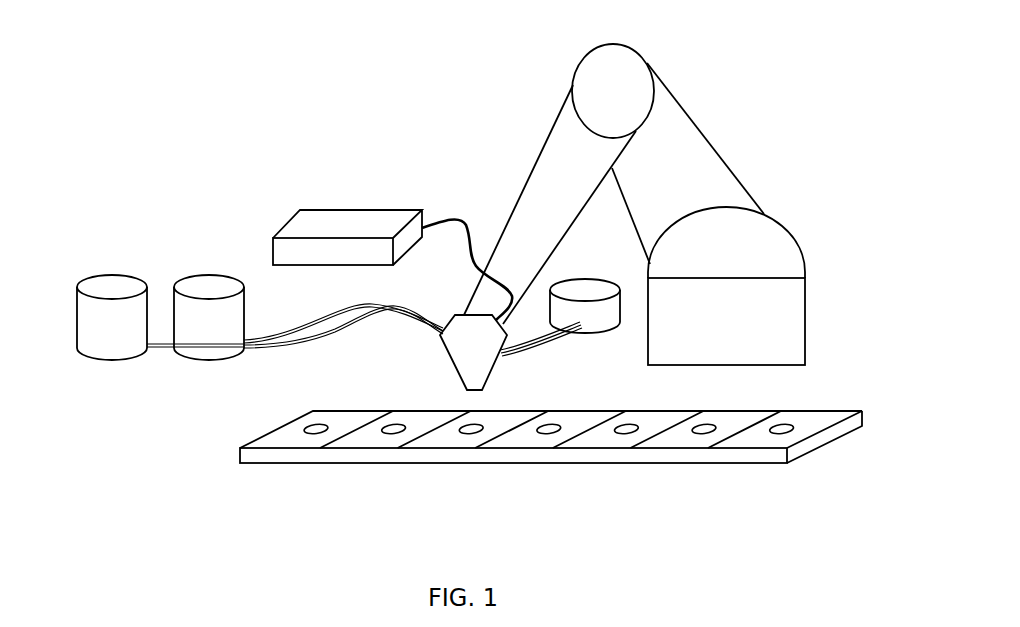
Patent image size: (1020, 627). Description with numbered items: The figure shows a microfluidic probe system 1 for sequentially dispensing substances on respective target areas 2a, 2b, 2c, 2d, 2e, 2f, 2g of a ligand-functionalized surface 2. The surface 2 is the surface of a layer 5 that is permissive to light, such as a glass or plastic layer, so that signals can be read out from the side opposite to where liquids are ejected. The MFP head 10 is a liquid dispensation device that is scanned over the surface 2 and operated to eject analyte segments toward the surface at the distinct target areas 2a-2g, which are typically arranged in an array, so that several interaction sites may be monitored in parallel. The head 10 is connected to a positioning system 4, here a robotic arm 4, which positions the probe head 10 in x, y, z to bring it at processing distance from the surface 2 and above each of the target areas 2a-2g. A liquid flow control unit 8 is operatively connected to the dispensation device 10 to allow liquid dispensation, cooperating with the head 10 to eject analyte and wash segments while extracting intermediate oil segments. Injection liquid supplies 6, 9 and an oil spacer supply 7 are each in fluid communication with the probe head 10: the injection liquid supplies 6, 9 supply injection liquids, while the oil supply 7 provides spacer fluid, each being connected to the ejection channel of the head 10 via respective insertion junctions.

The microfluidic probe system 1 is at (768, 102).
The ligand-functionalized surface 2 is at (282, 437).
The target area 2a is at (308, 434).
The target area 2b is at (386, 434).
The target area 2c is at (463, 434).
The target area 2d is at (541, 434).
The target area 2e is at (619, 434).
The target area 2f is at (696, 434).
The target area 2g is at (777, 434).
The positioning system 4 is at (562, 105).
The layer 5 is at (805, 446).
The injection liquid supply 6 is at (197, 287).
The oil spacer supply 7 is at (602, 326).
The liquid flow control unit 8 is at (348, 223).
The injection liquid supply 9 is at (98, 288).
The microfluidic probe head 10 is at (472, 360).